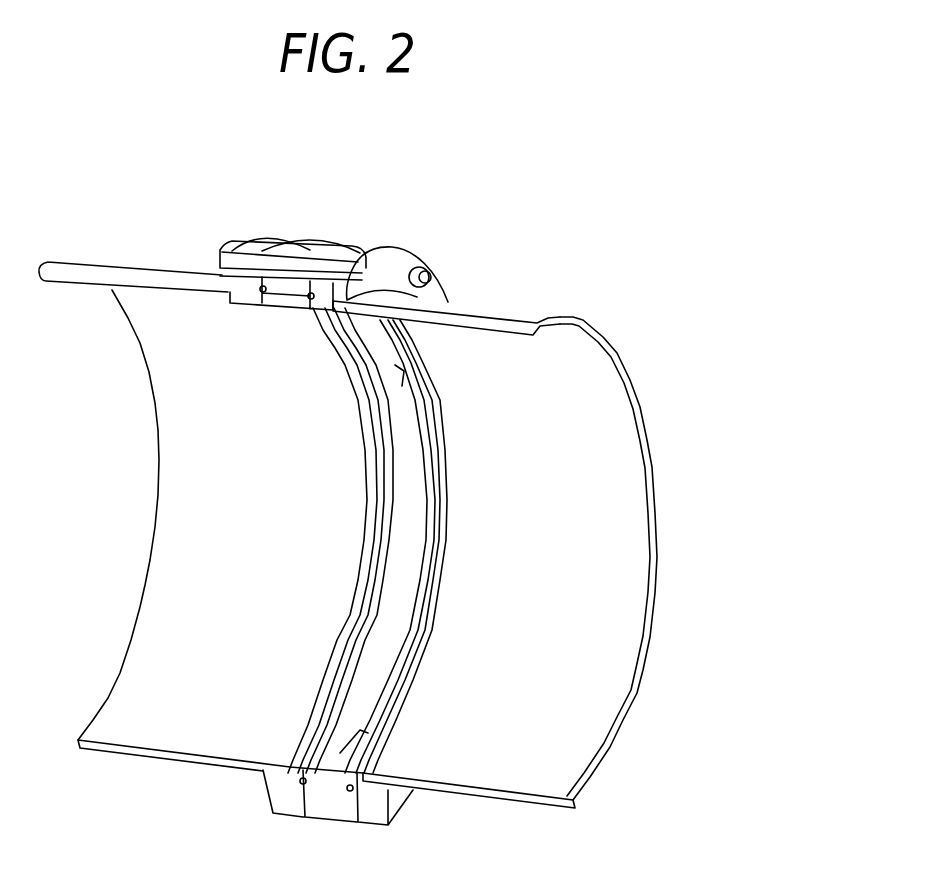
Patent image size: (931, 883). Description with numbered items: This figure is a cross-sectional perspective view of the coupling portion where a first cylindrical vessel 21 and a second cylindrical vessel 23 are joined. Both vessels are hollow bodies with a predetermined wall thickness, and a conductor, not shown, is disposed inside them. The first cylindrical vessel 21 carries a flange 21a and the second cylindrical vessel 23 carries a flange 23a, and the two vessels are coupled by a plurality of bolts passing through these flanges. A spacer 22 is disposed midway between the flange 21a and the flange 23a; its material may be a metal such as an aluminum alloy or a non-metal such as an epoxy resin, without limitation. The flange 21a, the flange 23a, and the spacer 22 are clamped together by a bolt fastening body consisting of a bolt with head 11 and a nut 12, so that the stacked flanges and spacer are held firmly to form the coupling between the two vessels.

The bolt with head 11 is at (225, 252).
The nut 12 is at (362, 268).
The first cylindrical vessel 21 is at (115, 266).
The flange 21a is at (263, 246).
The spacer 22 is at (313, 250).
The second cylindrical vessel 23 is at (503, 318).
The flange 23a is at (397, 267).